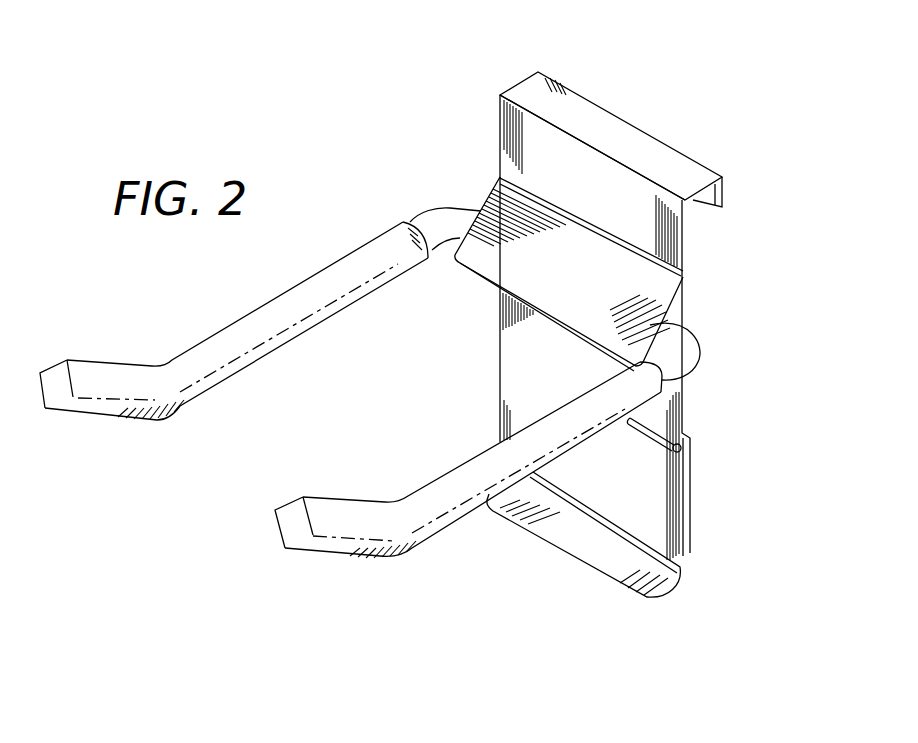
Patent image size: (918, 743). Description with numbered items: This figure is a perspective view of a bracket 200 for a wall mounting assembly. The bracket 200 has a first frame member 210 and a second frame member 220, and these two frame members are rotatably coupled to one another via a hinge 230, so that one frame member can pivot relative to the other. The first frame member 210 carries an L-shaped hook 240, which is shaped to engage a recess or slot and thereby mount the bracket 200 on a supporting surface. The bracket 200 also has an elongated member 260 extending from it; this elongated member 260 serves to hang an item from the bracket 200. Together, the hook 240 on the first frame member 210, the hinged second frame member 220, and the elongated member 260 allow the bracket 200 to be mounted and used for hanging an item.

The bracket 200 is at (700, 116).
The first frame member 210 is at (490, 120).
The second frame member 220 is at (550, 556).
The hinge 230 is at (672, 451).
The L-shaped hook 240 is at (700, 198).
The elongated member 260 is at (108, 398).